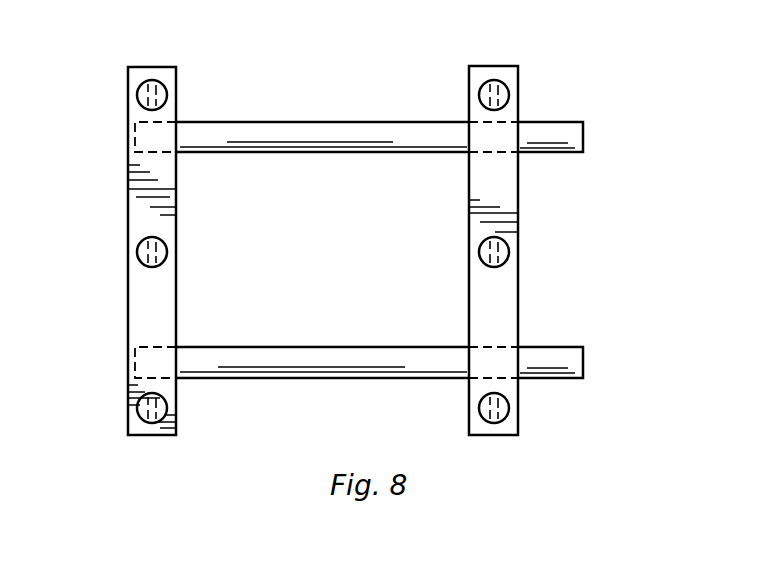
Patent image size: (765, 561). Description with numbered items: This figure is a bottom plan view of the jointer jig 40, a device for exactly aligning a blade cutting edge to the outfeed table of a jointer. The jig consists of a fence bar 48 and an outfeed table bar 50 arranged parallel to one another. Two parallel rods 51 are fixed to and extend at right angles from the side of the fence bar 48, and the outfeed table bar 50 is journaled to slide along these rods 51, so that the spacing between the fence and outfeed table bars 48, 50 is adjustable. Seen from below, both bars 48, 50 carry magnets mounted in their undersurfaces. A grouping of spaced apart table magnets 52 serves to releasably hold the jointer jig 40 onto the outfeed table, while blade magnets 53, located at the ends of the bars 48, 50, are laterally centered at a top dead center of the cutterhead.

The jointer jig 40 is at (565, 262).
The fence bar 48 is at (128, 304).
The outfeed table bar 50 is at (519, 322).
The parallel rods 51 is at (357, 122).
The table magnets 52 is at (140, 252).
The blade magnets 53 is at (150, 410).